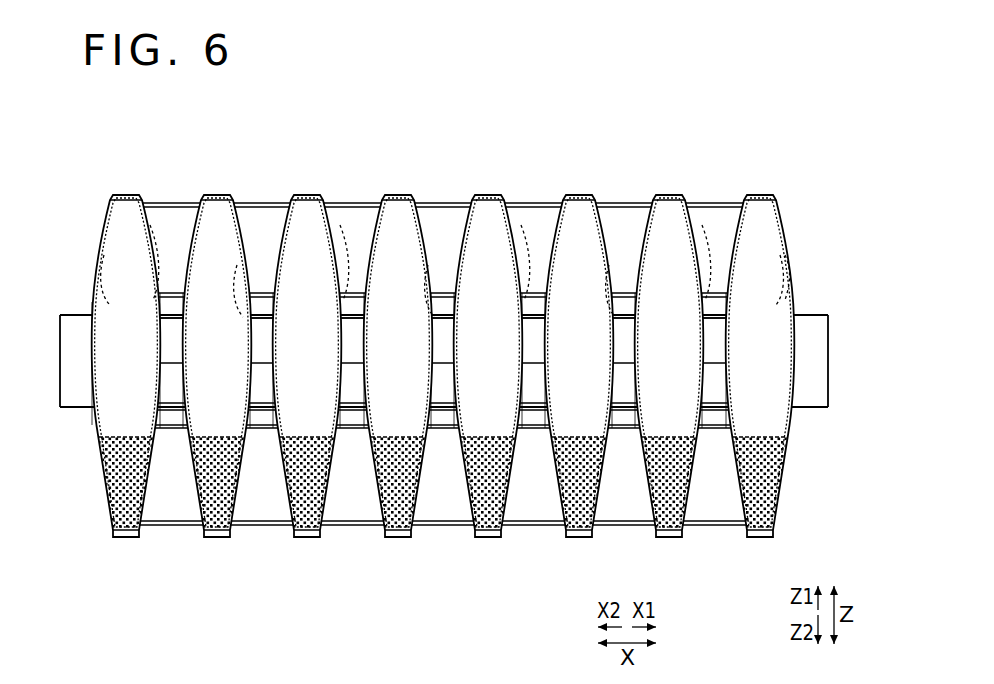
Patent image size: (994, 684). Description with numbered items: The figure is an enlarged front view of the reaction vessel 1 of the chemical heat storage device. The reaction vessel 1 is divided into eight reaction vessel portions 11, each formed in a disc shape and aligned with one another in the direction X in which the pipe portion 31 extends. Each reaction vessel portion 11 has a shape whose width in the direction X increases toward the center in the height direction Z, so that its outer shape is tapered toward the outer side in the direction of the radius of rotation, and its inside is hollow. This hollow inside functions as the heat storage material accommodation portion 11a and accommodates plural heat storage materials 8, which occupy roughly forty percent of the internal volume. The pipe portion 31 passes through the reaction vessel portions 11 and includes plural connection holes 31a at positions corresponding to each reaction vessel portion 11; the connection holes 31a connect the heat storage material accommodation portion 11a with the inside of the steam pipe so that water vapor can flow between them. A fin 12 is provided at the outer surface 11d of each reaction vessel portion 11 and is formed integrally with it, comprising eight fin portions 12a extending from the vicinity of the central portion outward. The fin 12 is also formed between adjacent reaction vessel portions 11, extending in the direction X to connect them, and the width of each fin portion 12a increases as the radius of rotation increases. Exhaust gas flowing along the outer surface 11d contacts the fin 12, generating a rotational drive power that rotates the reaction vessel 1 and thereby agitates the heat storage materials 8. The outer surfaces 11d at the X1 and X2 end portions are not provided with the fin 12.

The reaction vessel 1 is at (793, 115).
The heat storage material 8 is at (762, 590).
The reaction vessel portion 11 is at (760, 193).
The heat storage material accommodation portion 11a is at (783, 262).
The outer surface 11d is at (734, 204).
The fin 12 is at (152, 536).
The fin portion 12a is at (460, 552).
The pipe portion 31 is at (80, 322).
The connection hole 31a is at (628, 490).